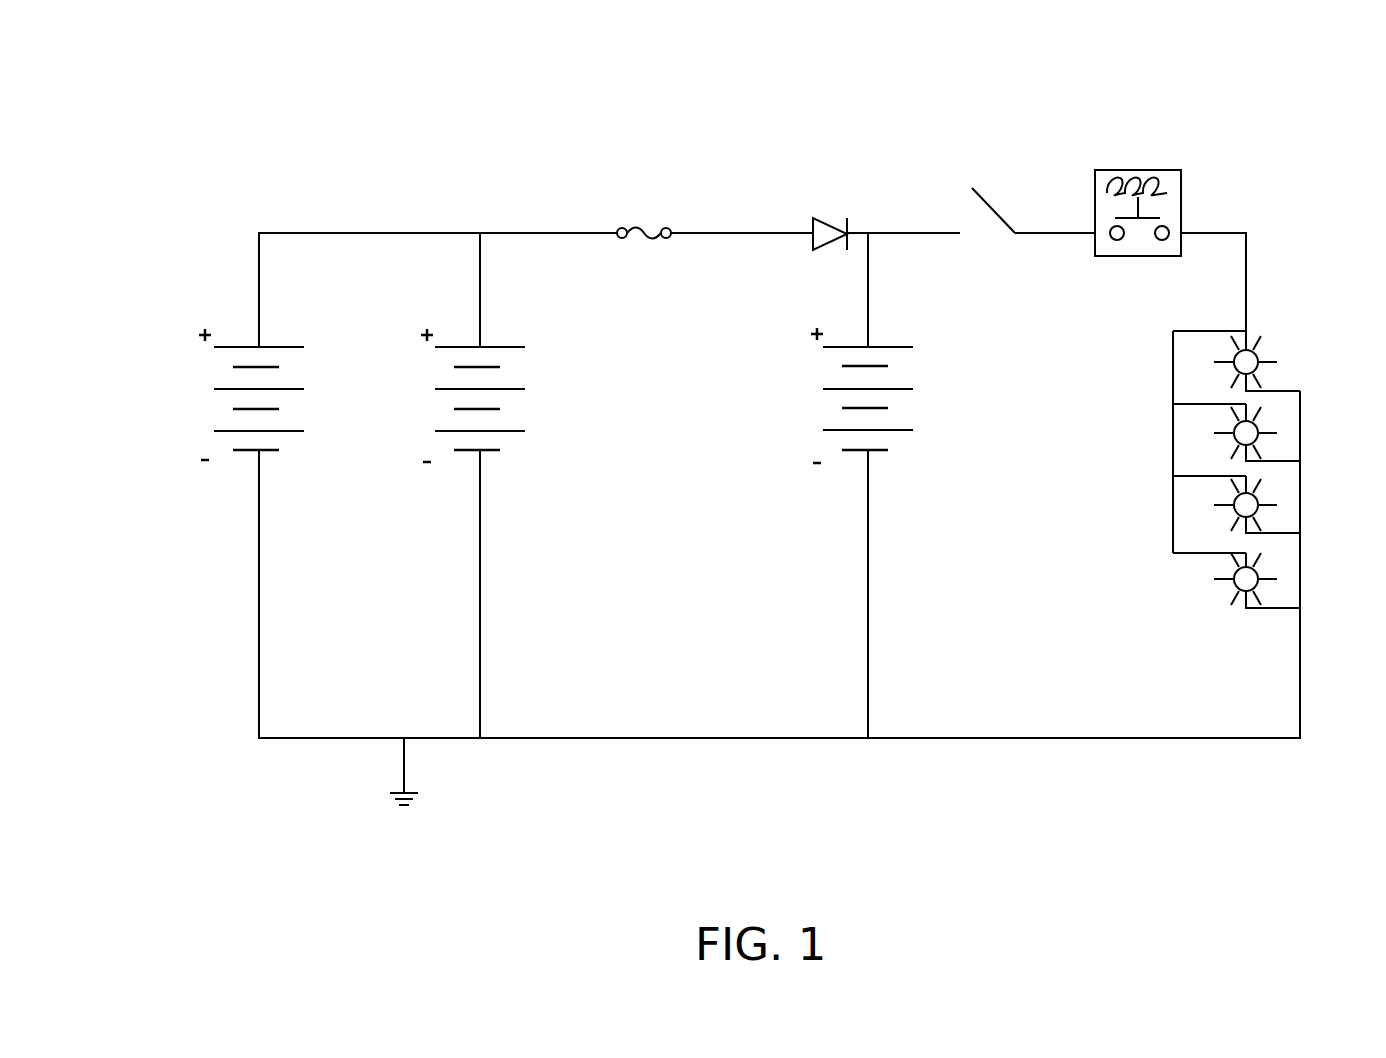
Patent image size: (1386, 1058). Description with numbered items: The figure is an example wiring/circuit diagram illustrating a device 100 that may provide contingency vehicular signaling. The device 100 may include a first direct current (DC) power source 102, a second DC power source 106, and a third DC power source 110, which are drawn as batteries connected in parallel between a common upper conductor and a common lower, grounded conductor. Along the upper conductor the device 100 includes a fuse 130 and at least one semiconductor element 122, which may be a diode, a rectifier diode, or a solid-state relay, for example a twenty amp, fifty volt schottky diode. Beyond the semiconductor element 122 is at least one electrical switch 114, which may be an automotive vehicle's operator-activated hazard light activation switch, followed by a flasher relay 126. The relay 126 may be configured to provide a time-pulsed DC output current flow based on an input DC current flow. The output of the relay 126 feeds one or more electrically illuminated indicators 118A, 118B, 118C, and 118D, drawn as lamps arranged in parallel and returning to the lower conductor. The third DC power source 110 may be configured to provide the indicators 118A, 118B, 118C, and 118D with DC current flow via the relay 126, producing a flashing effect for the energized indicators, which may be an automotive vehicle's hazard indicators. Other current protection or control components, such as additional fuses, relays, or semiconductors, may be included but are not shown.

The device 100 is at (143, 188).
The first direct current power source 102 is at (196, 413).
The second DC power source 106 is at (533, 397).
The third DC power source 110 is at (808, 430).
The electrical switch 114 is at (1008, 205).
The electrically illuminated indicator 118A is at (1275, 352).
The electrically illuminated indicator 118B is at (1222, 447).
The electrically illuminated indicator 118C is at (1220, 517).
The electrically illuminated indicator 118D is at (1240, 615).
The semiconductor element 122 is at (830, 210).
The flasher relay 126 is at (1193, 176).
The fuse 130 is at (656, 218).